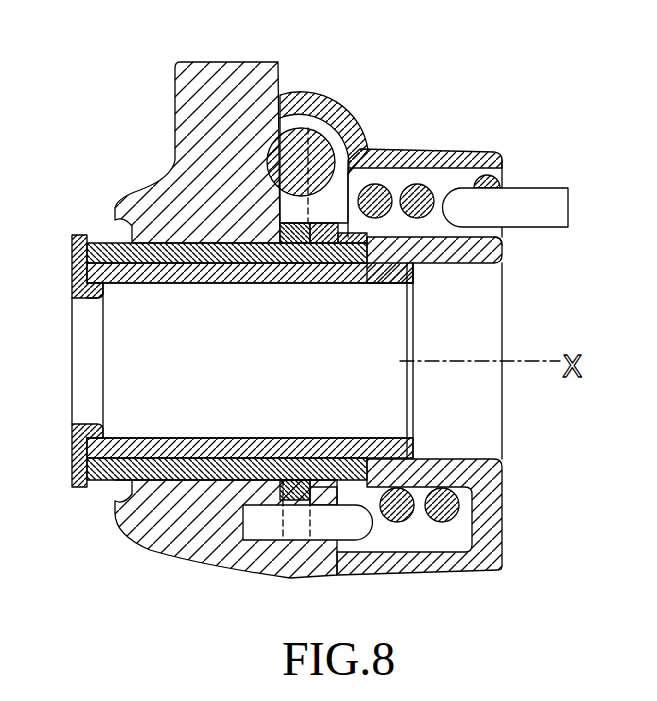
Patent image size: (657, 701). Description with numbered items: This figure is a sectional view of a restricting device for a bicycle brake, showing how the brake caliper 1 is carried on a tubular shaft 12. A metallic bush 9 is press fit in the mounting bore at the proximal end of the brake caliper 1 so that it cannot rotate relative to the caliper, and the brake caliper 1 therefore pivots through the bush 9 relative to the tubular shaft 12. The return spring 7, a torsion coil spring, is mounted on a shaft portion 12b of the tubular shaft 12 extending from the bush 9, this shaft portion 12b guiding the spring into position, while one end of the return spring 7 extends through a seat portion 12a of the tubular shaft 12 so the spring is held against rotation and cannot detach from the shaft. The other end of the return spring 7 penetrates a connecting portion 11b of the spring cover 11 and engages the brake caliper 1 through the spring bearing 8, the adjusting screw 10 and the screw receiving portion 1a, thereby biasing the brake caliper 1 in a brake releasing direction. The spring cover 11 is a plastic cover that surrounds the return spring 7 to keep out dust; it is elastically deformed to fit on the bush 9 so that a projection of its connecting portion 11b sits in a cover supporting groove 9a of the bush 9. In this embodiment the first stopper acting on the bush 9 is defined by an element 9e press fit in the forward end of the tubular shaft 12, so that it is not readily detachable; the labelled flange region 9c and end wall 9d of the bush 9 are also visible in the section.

The brake caliper 1 is at (188, 127).
The screw receiving portion 1a is at (323, 125).
The return spring 7 is at (440, 493).
The spring bearing 8 is at (275, 440).
The bush 9 is at (210, 285).
The cover supporting groove 9a is at (288, 285).
The hub flange 9c is at (79, 267).
The hub end wall 9d is at (386, 288).
The element 9e is at (88, 298).
The adjusting screw 10 is at (268, 162).
The spring cover 11 is at (423, 150).
The connecting portion 11b is at (338, 285).
The tubular shaft 12 is at (162, 285).
The seat portion 12a is at (489, 240).
The shaft portion 12b is at (443, 262).